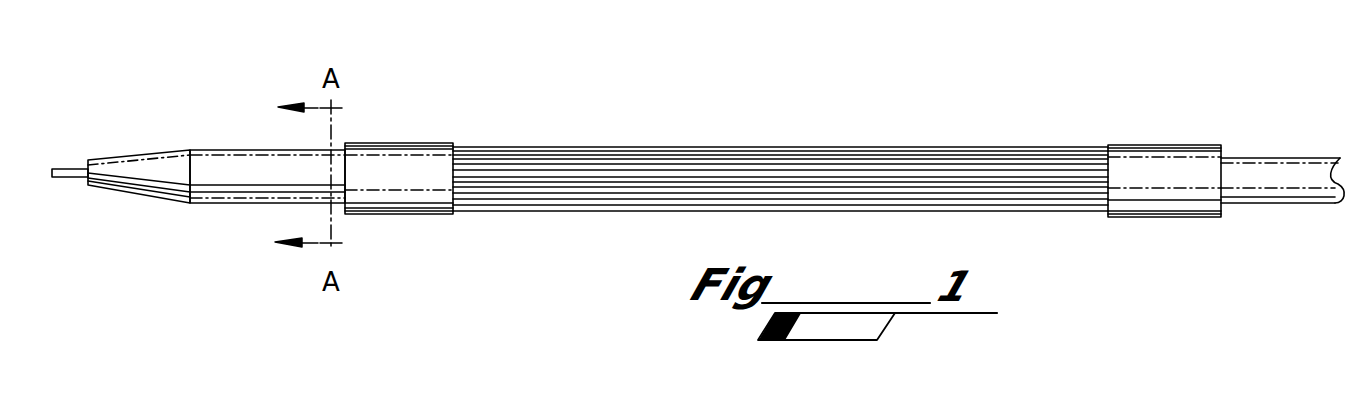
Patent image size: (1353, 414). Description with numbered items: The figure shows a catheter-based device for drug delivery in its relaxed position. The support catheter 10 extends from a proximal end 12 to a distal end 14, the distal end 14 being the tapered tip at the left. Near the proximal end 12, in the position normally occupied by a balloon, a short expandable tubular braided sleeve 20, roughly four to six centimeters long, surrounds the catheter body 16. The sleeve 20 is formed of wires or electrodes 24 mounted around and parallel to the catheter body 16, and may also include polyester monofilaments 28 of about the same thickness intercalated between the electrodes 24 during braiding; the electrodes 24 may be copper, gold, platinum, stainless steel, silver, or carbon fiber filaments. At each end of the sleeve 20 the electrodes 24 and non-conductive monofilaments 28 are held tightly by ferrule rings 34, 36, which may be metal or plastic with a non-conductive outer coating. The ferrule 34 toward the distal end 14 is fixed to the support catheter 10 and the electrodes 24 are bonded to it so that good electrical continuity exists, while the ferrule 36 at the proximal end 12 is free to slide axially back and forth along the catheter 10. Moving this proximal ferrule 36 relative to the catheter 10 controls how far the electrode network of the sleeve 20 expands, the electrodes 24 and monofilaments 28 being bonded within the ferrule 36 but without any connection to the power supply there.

The catheter 10 is at (271, 132).
The proximal end 12 is at (1298, 203).
The distal end 14 is at (147, 197).
The catheter body 16 is at (891, 138).
The expandable tubular braided sleeve 20 is at (580, 152).
The wires or electrodes 24 is at (672, 205).
The polyester monofilaments 28 is at (505, 168).
The ferrule ring 34 is at (372, 214).
The ferrule ring 36 is at (1137, 145).